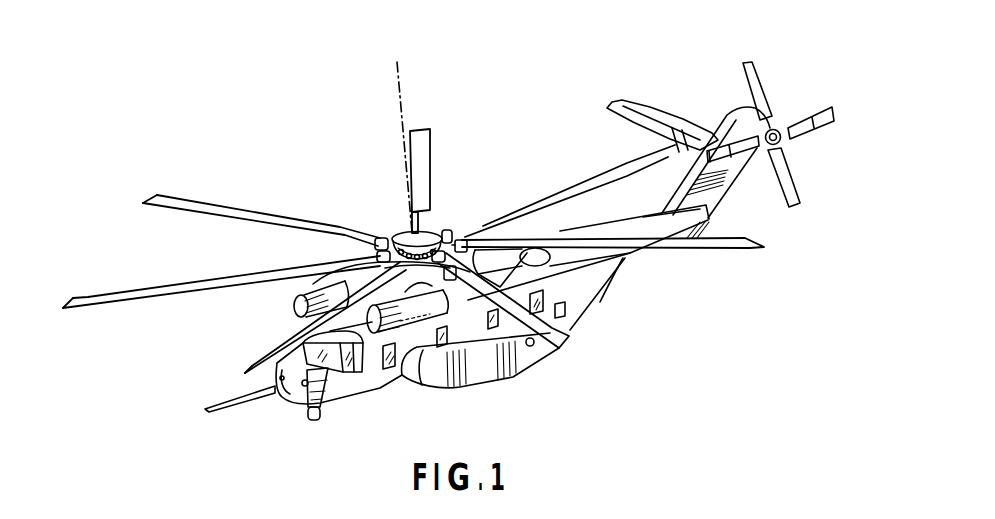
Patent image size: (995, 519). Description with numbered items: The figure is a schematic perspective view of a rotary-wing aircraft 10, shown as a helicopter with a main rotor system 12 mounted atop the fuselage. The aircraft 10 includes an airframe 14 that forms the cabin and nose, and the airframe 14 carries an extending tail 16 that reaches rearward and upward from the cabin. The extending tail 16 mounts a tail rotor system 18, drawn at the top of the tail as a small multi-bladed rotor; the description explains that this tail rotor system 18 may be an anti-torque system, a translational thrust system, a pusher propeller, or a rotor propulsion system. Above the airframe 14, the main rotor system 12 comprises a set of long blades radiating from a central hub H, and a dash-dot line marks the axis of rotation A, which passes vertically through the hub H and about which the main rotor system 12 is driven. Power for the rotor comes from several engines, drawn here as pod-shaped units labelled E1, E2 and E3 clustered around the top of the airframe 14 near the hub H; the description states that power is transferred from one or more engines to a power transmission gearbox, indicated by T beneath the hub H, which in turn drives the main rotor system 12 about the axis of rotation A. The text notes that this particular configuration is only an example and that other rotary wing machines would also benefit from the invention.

The rotary-wing aircraft 10 is at (505, 157).
The main rotor system 12 is at (392, 220).
The airframe 14 is at (573, 313).
The extending tail 16 is at (617, 225).
The tail rotor system 18 is at (790, 142).
The axis of rotation A is at (401, 122).
The rotor hub H is at (388, 235).
The transmission T is at (433, 282).
The first engine E1 is at (455, 327).
The second engine E2 is at (503, 266).
The third engine E3 is at (320, 279).